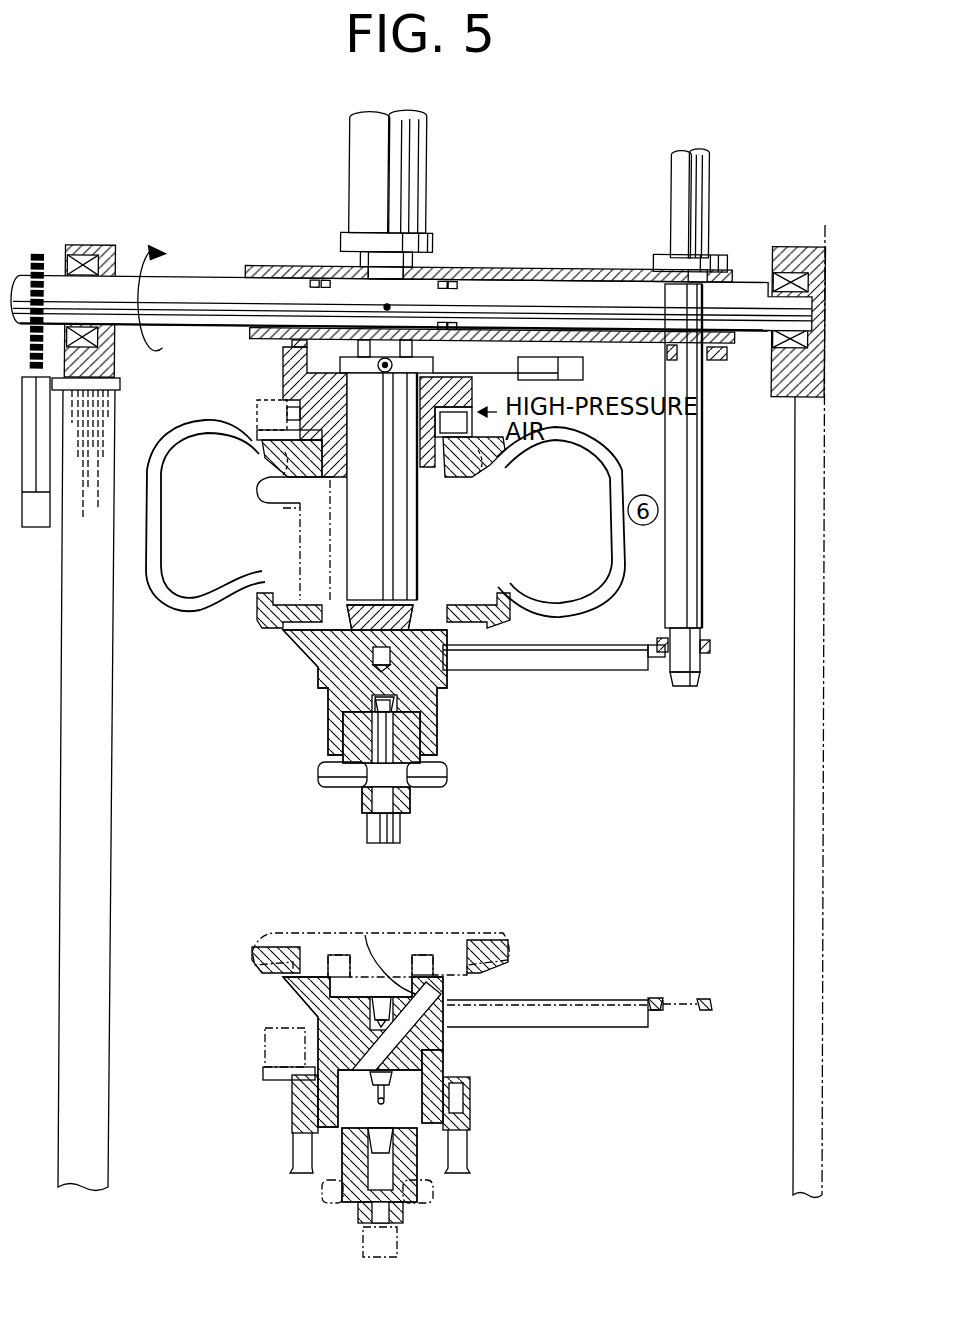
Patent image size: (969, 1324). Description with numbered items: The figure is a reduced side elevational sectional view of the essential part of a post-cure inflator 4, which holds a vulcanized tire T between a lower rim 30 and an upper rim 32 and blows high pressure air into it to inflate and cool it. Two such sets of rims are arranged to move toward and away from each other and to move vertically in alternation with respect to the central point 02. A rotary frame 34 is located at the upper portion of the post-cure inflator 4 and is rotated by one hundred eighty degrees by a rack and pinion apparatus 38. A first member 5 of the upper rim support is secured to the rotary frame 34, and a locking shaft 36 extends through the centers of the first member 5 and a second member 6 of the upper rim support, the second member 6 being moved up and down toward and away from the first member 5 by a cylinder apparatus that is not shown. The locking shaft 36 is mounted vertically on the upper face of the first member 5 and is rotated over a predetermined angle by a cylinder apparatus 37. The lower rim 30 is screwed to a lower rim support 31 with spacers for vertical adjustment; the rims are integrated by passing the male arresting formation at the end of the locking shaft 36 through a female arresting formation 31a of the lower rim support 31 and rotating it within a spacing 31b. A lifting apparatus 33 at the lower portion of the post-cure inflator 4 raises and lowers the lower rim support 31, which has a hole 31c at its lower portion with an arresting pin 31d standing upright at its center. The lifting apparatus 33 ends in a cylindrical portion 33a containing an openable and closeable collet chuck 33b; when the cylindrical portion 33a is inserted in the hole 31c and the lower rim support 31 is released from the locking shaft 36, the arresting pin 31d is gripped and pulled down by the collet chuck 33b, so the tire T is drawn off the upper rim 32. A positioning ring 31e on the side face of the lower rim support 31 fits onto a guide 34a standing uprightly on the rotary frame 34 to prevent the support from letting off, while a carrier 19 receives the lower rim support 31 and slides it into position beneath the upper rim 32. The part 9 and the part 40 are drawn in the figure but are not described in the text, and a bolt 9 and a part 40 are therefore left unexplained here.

The post-cure inflator 4 is at (210, 148).
The rack and pinion apparatus 38 is at (38, 258).
The rotary frame 34 is at (273, 265).
The central point 02 is at (389, 306).
The first member of the upper rim support 5 is at (468, 333).
The second member of the upper rim support 6 is at (297, 387).
The bolt 9 is at (257, 410).
The cylinder apparatus 37 is at (583, 371).
The tire T is at (608, 432).
The upper rim 32 is at (462, 468).
The locking shaft 36 is at (418, 548).
The inner cylinder 40 is at (297, 548).
The guide 34a is at (704, 577).
The lower rim 30 is at (277, 615).
The lower rim support 31 is at (323, 670).
The female arresting formation 31a is at (398, 935).
The spacing 31b is at (372, 952).
The hole 31c is at (413, 730).
The arresting pin 31d is at (367, 717).
The positioning ring 31e is at (700, 997).
The carrier 19 is at (445, 1063).
The lifting apparatus 33 is at (340, 1243).
The cylindrical portion 33a is at (417, 1160).
The collet chuck 33b is at (383, 767).